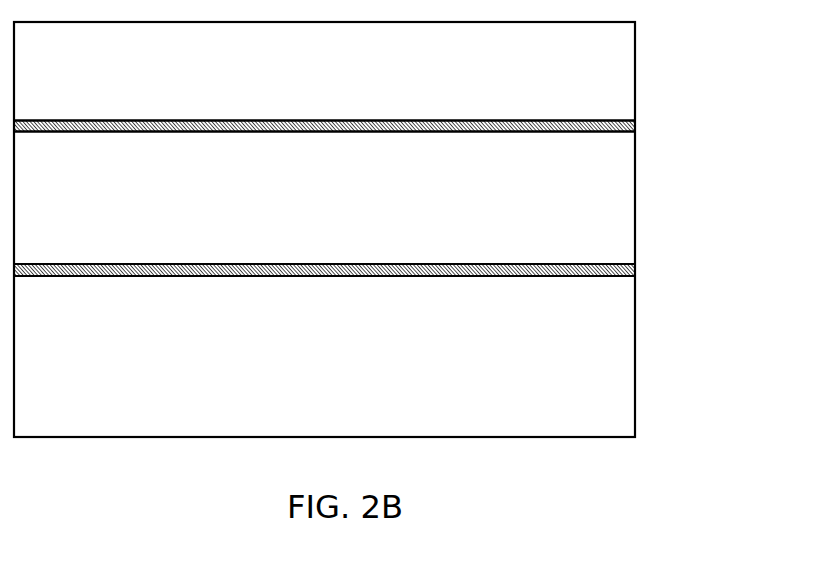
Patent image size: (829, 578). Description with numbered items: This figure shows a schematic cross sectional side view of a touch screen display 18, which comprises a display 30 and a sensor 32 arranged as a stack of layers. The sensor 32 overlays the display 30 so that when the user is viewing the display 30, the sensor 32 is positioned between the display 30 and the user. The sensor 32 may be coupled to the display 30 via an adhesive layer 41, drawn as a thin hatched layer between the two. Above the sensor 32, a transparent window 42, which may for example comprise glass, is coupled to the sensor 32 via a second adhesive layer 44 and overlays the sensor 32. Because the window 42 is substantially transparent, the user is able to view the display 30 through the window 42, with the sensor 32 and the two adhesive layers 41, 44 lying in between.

The touch screen display 18 is at (717, 156).
The transparent window 42 is at (615, 80).
The adhesive layer 44 is at (633, 128).
The sensor 32 is at (615, 220).
The adhesive layer 41 is at (633, 270).
The display 30 is at (615, 376).